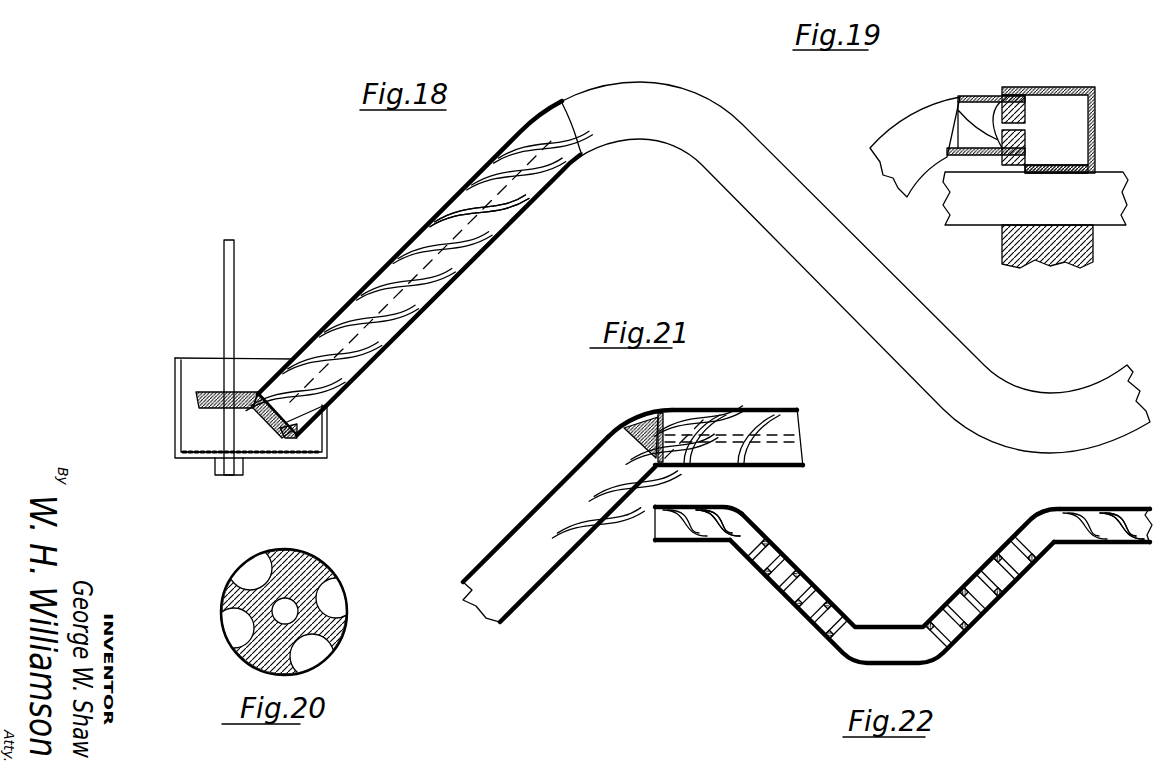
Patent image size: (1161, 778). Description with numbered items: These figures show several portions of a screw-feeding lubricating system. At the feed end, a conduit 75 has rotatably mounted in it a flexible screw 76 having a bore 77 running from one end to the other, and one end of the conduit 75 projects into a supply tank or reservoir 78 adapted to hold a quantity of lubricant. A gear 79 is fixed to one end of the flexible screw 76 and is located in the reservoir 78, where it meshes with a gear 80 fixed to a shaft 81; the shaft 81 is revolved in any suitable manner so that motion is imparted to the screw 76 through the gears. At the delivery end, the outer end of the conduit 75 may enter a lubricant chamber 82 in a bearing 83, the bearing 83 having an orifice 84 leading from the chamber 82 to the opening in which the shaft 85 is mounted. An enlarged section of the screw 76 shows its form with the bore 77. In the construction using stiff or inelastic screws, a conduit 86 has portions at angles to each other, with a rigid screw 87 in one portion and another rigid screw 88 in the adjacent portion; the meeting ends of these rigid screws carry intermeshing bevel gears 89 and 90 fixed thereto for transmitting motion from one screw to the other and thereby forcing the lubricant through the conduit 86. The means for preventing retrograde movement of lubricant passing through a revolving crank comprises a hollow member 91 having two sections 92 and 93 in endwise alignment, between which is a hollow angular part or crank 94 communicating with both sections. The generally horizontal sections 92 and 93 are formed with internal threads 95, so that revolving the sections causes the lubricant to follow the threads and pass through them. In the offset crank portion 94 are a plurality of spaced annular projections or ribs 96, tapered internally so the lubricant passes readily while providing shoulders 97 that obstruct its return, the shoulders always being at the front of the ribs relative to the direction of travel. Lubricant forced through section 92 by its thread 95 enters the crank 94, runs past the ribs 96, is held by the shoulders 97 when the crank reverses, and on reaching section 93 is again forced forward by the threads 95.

In FIG. 18, the conduit 75 is at (692, 167).
In FIG. 19, the conduit 75 is at (906, 125).
In FIG. 18, the flexible screw 76 is at (445, 268).
In FIG. 19, the flexible screw 76 is at (975, 96).
In FIG. 20, the flexible screw 76 is at (330, 615).
In FIG. 18, the bore 77 is at (428, 216).
In FIG. 19, the bore 77 is at (1012, 100).
In FIG. 20, the bore 77 is at (318, 597).
In FIG. 18, the supply tank or reservoir 78 is at (176, 418).
In FIG. 18, the gear 79 is at (296, 436).
In FIG. 18, the gear 80 is at (247, 390).
In FIG. 18, the shaft 81 is at (222, 307).
In FIG. 19, the lubricant chamber 82 is at (1080, 125).
In FIG. 19, the bearing 83 is at (1093, 248).
In FIG. 19, the orifice 84 is at (1062, 165).
In FIG. 19, the shaft 85 is at (1102, 192).
In FIG. 21, the conduit 86 is at (745, 410).
In FIG. 21, the rigid screw 87 is at (560, 487).
In FIG. 21, the rigid screw 88 is at (770, 433).
In FIG. 21, the bevel gear 89 is at (640, 428).
In FIG. 21, the bevel gear 90 is at (637, 430).
In FIG. 22, the hollow member 91 is at (1003, 545).
In FIG. 22, the section 92 is at (710, 545).
In FIG. 22, the section 93 is at (1126, 542).
In FIG. 22, the angular part or crank 94 is at (835, 632).
In FIG. 22, the internal threads 95 is at (752, 522).
In FIG. 22, the annular projections or ribs 96 is at (836, 597).
In FIG. 22, the shoulders 97 is at (812, 572).